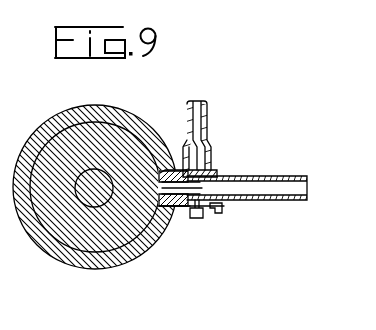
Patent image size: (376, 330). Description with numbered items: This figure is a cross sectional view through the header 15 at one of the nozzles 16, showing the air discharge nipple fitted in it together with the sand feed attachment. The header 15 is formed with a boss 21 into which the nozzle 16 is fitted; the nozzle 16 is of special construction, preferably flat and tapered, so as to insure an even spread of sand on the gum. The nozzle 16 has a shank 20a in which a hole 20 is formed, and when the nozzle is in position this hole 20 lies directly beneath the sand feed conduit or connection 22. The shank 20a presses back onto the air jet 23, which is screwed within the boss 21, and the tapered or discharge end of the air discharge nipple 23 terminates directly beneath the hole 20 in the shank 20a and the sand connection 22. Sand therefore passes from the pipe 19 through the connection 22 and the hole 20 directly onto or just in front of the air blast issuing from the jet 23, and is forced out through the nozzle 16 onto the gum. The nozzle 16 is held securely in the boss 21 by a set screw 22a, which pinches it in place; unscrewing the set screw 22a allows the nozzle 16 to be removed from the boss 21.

The header 15 is at (103, 232).
The nozzle 16 is at (290, 187).
The pipe 19 is at (198, 119).
The hole 20 is at (203, 191).
The shank 20a is at (185, 214).
The boss 21 is at (182, 175).
The sand feed conduit or connection 22 is at (196, 160).
The set screw 22a is at (198, 218).
The air jet (air discharge nipple) 23 is at (160, 178).